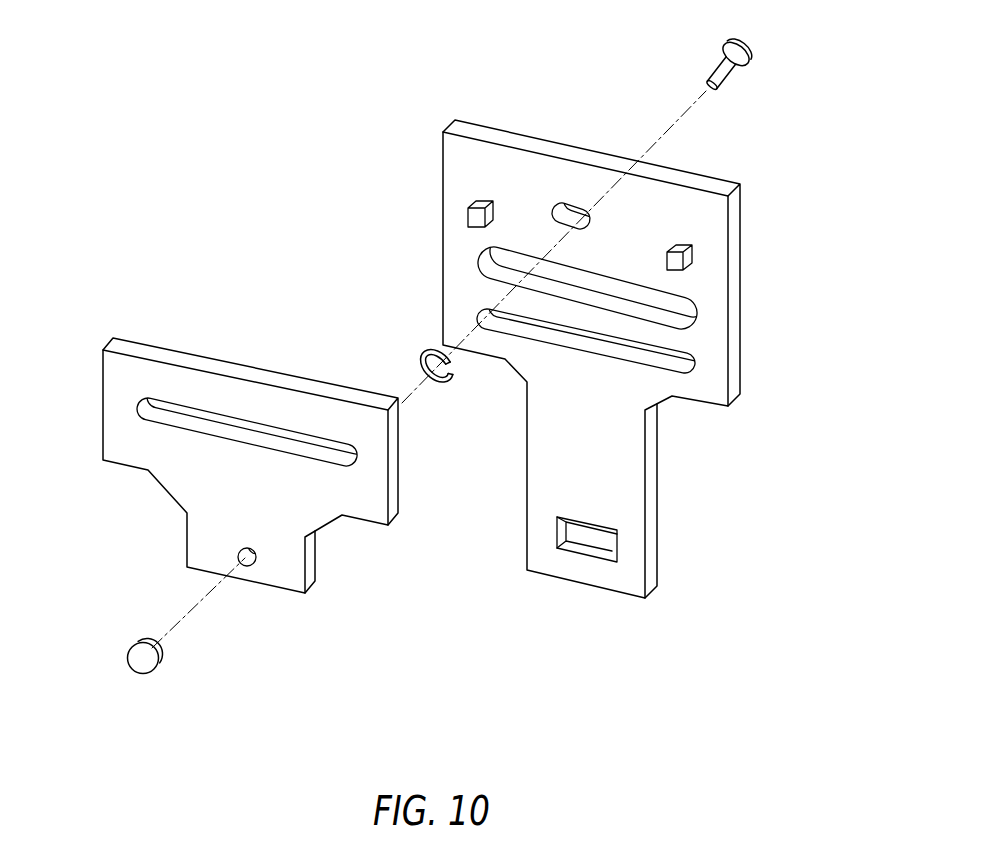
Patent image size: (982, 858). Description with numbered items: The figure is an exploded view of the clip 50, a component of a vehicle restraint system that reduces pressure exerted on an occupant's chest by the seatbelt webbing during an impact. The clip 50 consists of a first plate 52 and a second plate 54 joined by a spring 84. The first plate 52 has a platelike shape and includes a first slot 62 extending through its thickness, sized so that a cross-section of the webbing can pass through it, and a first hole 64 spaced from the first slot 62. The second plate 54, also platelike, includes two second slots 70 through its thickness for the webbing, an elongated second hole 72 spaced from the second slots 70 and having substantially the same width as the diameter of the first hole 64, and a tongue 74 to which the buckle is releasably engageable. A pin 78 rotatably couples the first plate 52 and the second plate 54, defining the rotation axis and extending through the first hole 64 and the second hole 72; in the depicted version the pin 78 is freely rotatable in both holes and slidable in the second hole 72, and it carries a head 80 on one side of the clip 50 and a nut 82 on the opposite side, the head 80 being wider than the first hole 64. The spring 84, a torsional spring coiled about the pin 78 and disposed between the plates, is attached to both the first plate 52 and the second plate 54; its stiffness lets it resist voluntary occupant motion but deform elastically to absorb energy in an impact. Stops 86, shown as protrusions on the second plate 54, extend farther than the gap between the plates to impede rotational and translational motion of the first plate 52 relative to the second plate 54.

The clip 50 is at (288, 163).
The first plate 52 is at (103, 382).
The second plate 54 is at (740, 243).
The first slot 62 is at (227, 415).
The first hole 64 is at (242, 558).
The second slots 70 is at (693, 322).
The second hole 72 is at (573, 207).
The tongue 74 is at (658, 497).
The pin 78 is at (716, 69).
The head 80 is at (742, 36).
The nut 82 is at (130, 650).
The spring 84 is at (428, 352).
The stops 86 is at (468, 214).